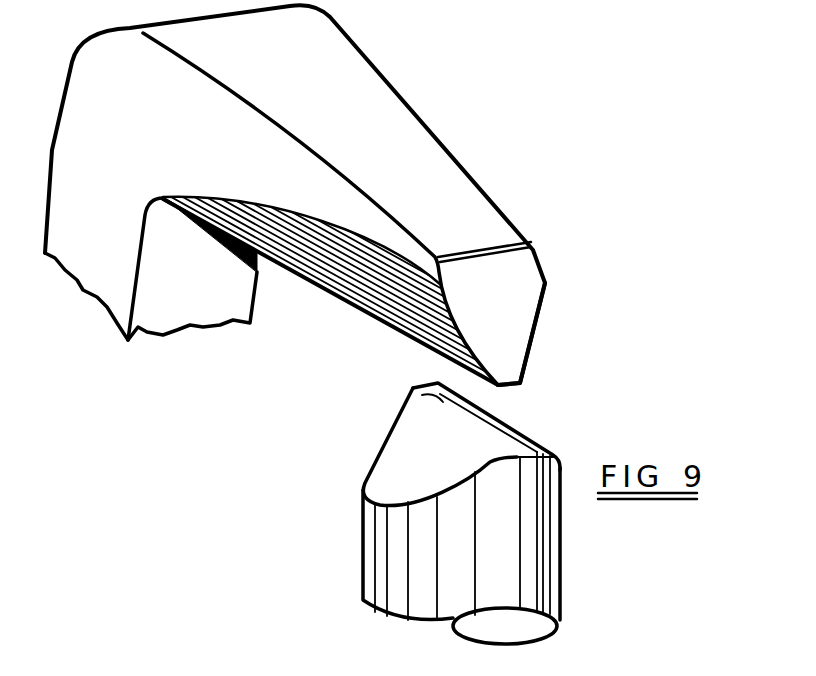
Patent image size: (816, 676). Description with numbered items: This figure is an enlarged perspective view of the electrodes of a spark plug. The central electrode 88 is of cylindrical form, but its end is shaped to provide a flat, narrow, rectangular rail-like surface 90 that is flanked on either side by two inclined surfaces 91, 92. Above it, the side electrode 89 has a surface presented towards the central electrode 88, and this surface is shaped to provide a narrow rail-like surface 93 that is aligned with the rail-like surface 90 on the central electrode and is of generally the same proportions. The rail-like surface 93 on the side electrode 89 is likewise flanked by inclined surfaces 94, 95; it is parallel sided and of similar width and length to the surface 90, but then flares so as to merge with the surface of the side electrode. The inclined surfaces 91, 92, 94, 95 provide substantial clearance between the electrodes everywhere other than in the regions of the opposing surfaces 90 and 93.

The central electrode 88 is at (533, 530).
The side electrode 89 is at (109, 67).
The rail-like surface 90 is at (428, 395).
The inclined surface 91 is at (392, 468).
The inclined surface 92 is at (537, 450).
The rail-like surface 93 is at (520, 394).
The inclined surface 94 is at (357, 280).
The inclined surface 95 is at (547, 317).